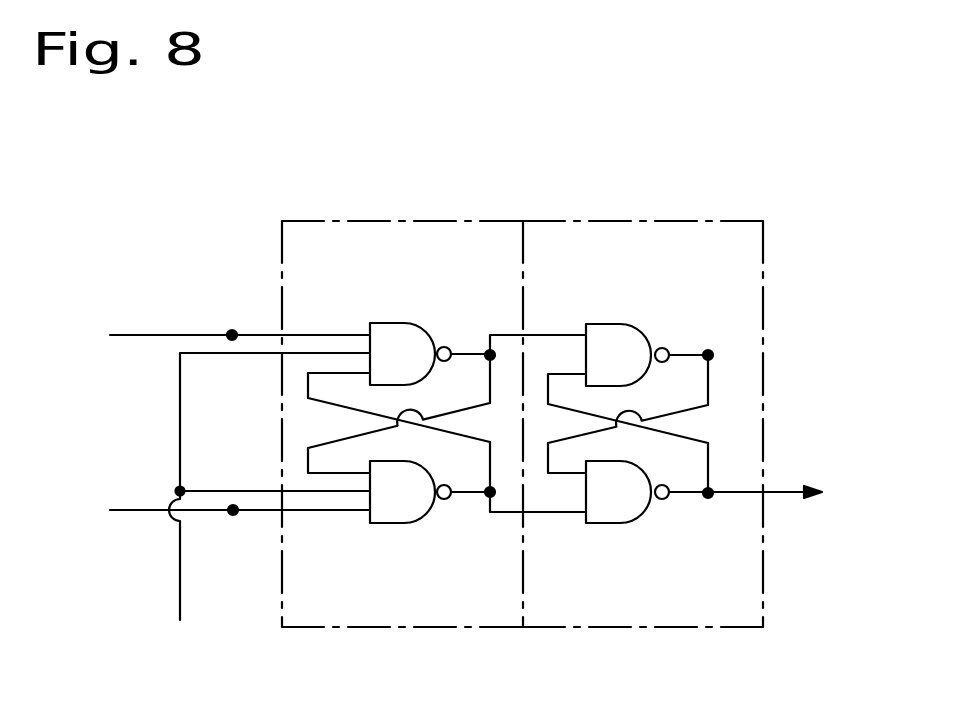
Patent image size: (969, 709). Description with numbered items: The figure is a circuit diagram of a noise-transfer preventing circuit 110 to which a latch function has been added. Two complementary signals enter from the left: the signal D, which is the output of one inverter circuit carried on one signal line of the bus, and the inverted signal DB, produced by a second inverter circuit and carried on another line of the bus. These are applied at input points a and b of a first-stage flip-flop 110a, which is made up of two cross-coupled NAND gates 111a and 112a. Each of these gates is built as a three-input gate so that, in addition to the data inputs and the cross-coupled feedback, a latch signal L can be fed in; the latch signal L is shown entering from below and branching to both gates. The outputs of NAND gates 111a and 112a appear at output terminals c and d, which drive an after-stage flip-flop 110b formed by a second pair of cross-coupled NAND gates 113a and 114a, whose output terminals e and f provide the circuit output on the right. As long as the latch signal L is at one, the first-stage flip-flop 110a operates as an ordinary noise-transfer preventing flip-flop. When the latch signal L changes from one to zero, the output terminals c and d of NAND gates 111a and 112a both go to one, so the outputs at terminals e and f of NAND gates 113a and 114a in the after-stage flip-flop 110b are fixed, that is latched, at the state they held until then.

The noise-transfer preventing circuit 110 is at (592, 366).
The first-stage flip-flop 110a is at (330, 220).
The after-stage flip-flop 110b is at (758, 312).
The NAND gate 111a is at (388, 523).
The NAND gate 112a is at (387, 323).
The NAND gate 113a is at (615, 523).
The NAND gate 114a is at (613, 324).
The input terminal a is at (233, 512).
The input terminal b is at (232, 333).
The output terminal c is at (490, 494).
The output terminal d is at (490, 353).
The output terminal e is at (708, 495).
The output terminal f is at (708, 353).
The latch signal L is at (269, 512).
The output signal D is at (216, 511).
The output signal DB is at (207, 334).